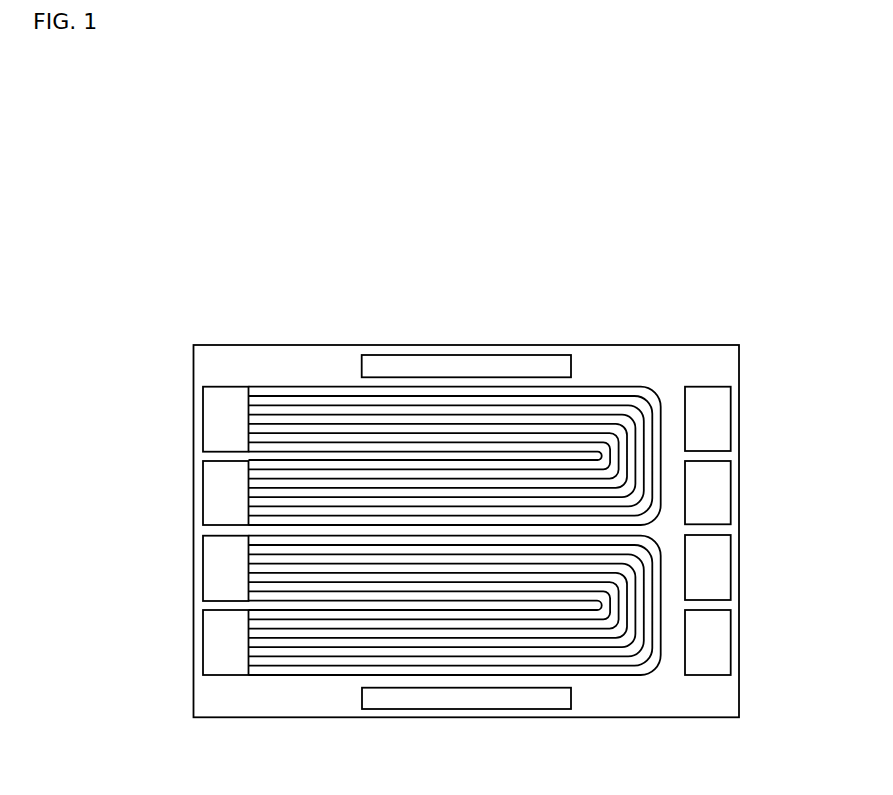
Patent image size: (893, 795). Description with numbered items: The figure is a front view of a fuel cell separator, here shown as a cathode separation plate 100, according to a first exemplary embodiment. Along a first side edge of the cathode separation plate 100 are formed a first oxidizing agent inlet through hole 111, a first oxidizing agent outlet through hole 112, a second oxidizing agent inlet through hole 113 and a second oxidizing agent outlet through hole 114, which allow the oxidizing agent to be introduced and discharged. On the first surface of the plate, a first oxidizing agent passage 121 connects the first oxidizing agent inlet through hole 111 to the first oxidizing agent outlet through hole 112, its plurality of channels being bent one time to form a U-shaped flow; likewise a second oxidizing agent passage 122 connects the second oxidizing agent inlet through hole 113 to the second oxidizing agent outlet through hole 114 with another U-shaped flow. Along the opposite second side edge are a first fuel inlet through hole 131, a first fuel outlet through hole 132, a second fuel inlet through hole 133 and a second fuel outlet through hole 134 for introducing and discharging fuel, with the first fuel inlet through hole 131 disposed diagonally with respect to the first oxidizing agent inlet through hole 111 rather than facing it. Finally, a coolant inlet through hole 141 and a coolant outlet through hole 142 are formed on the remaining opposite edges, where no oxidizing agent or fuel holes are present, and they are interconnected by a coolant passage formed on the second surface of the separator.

The cathode separation plate 100 is at (736, 342).
The first oxidizing agent inlet through hole 111 is at (211, 638).
The first oxidizing agent outlet through hole 112 is at (211, 566).
The second oxidizing agent inlet through hole 113 is at (211, 492).
The second oxidizing agent outlet through hole 114 is at (211, 416).
The first oxidizing agent passage 121 is at (618, 676).
The second oxidizing agent passage 122 is at (611, 388).
The first fuel inlet through hole 131 is at (721, 416).
The first fuel outlet through hole 132 is at (721, 492).
The second fuel inlet through hole 133 is at (721, 566).
The second fuel outlet through hole 134 is at (721, 638).
The coolant inlet through hole 141 is at (430, 699).
The coolant outlet through hole 142 is at (440, 361).